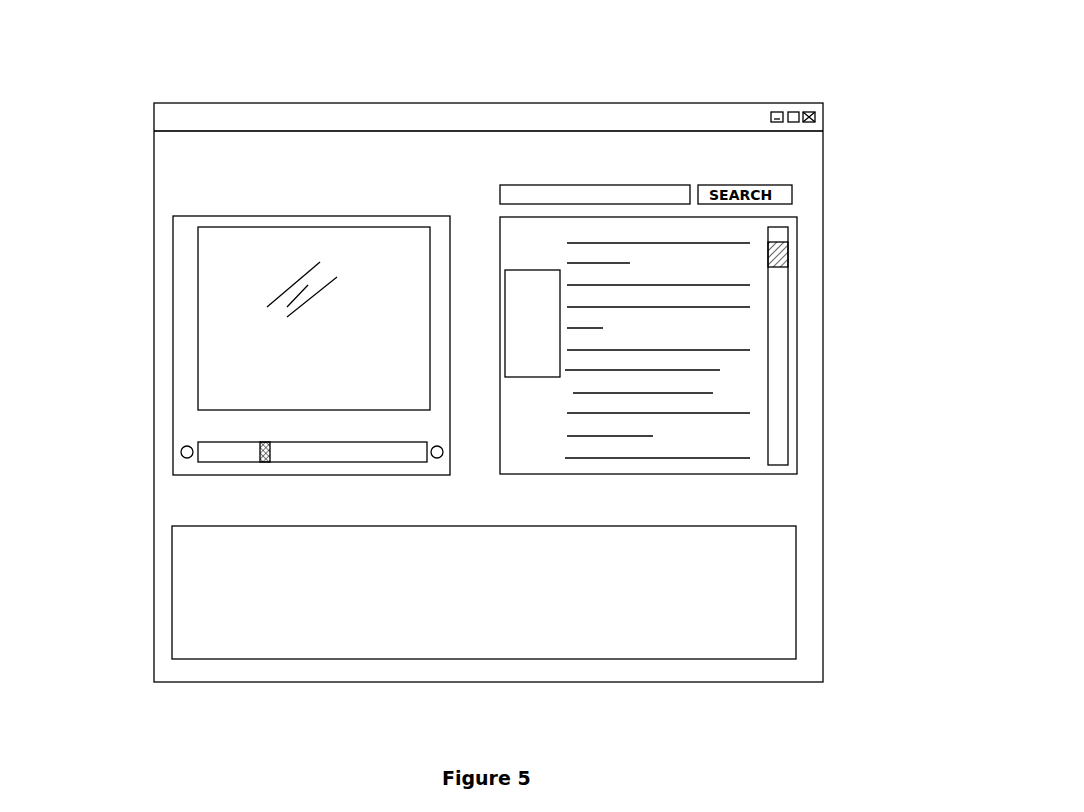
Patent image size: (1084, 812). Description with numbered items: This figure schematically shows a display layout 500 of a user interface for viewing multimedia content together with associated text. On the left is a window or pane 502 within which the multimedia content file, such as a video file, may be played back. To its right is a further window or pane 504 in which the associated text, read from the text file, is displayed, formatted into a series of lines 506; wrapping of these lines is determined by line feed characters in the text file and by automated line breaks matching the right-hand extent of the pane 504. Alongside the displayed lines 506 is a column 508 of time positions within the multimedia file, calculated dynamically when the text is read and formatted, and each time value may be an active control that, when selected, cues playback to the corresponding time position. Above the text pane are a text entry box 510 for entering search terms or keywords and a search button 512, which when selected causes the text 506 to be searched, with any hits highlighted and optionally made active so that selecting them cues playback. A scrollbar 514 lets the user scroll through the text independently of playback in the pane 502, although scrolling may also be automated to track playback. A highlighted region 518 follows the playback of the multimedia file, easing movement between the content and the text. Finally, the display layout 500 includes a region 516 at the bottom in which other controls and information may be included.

The display layout 500 is at (488, 347).
The window or pane 502 is at (251, 345).
The further window or pane 504 is at (803, 250).
The lines 506 is at (721, 465).
The column of time positions 508 is at (506, 256).
The text entry box 510 is at (595, 130).
The search button 512 is at (488, 94).
The scrollbar 514 is at (846, 346).
The region 516 is at (484, 642).
The highlighted region 518 is at (566, 381).